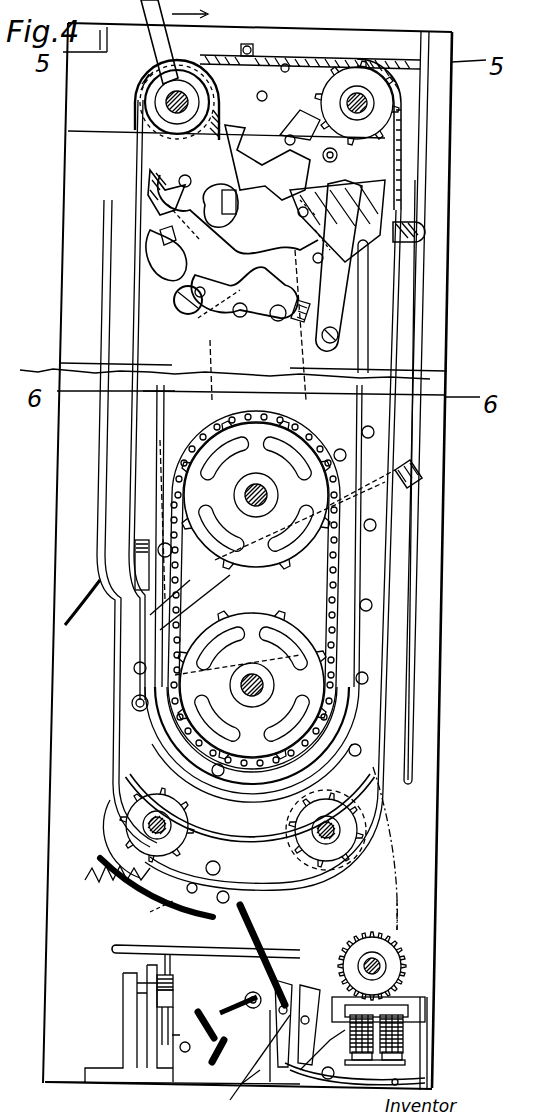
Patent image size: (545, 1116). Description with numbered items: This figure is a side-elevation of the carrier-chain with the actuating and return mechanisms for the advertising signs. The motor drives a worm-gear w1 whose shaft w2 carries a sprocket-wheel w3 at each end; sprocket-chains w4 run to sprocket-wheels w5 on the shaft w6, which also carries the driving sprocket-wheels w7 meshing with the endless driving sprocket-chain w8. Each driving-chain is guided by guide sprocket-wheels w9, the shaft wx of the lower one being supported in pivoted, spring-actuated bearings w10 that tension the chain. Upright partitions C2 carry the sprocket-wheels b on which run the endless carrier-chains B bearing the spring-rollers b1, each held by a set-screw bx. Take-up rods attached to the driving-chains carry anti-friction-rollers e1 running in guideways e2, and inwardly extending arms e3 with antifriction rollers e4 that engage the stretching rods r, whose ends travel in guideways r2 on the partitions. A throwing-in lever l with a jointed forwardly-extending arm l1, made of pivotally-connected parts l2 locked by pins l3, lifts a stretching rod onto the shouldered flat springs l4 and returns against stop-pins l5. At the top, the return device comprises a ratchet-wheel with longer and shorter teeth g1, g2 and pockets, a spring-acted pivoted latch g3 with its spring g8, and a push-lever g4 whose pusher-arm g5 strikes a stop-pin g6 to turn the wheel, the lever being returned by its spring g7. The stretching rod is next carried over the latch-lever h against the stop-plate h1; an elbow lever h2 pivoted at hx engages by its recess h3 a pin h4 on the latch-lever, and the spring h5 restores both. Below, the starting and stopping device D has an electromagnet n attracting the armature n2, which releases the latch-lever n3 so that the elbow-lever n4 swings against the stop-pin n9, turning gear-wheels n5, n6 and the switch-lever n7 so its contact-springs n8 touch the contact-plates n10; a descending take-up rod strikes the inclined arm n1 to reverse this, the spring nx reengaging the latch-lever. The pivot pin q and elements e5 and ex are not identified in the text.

The guide sprocket-wheel w9 is at (170, 99).
The endless driving sprocket-chain w8 is at (168, 107).
The sprocket-wheel w5 is at (380, 100).
The sprocket-chain w4 is at (397, 912).
The sprocket-wheel w3 is at (462, 956).
The shaft of the worm-gear w2 is at (392, 975).
The worm-gear w1 is at (388, 993).
The shaft of the sprocket-wheels w6 is at (345, 830).
The driving sprocket-wheel w7 is at (340, 805).
The pivoted and spring-actuated bearing w10 is at (128, 782).
The shaft of the lower guide sprocket-wheel wx is at (150, 835).
The longer tooth g1 is at (160, 192).
The shorter tooth g2 is at (180, 160).
The pivoted latch g3 is at (160, 250).
The push-lever g4 is at (166, 57).
The pusher-arm g5 is at (267, 162).
The stop-pin g6 is at (150, 230).
The spring g7 is at (165, 235).
The spring g8 is at (205, 318).
The pivot pin q is at (231, 151).
The upright partition C2 is at (213, 472).
The anti-friction-roller e1 is at (250, 45).
The guideway e2 is at (400, 296).
The inwardly extending arm e3 is at (273, 78).
The antifriction roller e4 is at (235, 483).
The roller e5 is at (217, 870).
The guide ex is at (151, 921).
The stretching rod r is at (170, 185).
The guideway r2 is at (380, 330).
The latch-lever h is at (412, 261).
The stop-plate h1 is at (395, 150).
The pivot hx is at (419, 143).
The elbow lever h2 is at (420, 238).
The recess h3 is at (322, 195).
The pin h4 is at (337, 230).
The spring h5 is at (360, 272).
The sprocket-wheel b is at (254, 590).
The endless carrier-chain B is at (170, 618).
The set-screw bx is at (160, 548).
The spring-roller b1 is at (325, 549).
The lever l is at (400, 476).
The forwardly-extending arm l1 is at (115, 714).
The pivotally-connected part l2 is at (95, 654).
The pin l3 is at (206, 646).
The flat spring l4 is at (66, 602).
The stop-pin l5 is at (370, 470).
The electromagnet n is at (400, 1028).
The inclined arm n1 is at (264, 955).
The armature n2 is at (430, 1064).
The latch-lever n3 is at (313, 1025).
The elbow-lever n4 is at (296, 1018).
The gear-wheel n5 is at (206, 965).
The gear-wheel n6 is at (234, 997).
The switch-lever n7 is at (185, 1000).
The contact-spring n8 is at (180, 1023).
The stop-pin n9 is at (270, 1015).
The contact-plate n10 is at (212, 1045).
The spring nx is at (239, 1093).
The starting and stopping device D is at (287, 1062).